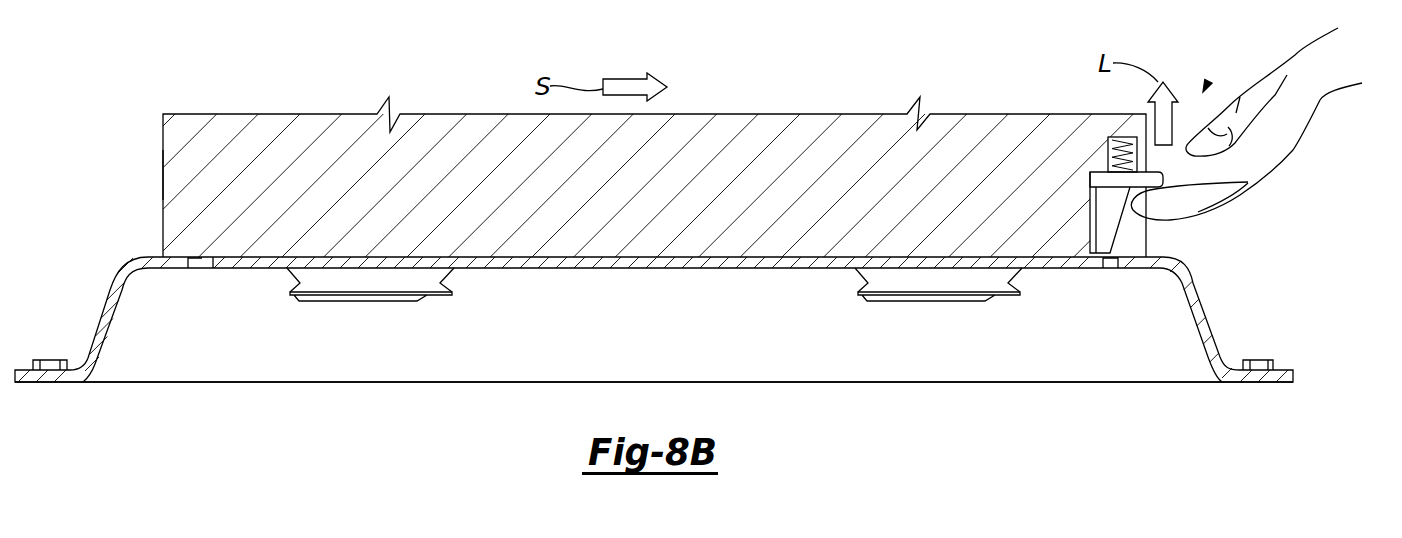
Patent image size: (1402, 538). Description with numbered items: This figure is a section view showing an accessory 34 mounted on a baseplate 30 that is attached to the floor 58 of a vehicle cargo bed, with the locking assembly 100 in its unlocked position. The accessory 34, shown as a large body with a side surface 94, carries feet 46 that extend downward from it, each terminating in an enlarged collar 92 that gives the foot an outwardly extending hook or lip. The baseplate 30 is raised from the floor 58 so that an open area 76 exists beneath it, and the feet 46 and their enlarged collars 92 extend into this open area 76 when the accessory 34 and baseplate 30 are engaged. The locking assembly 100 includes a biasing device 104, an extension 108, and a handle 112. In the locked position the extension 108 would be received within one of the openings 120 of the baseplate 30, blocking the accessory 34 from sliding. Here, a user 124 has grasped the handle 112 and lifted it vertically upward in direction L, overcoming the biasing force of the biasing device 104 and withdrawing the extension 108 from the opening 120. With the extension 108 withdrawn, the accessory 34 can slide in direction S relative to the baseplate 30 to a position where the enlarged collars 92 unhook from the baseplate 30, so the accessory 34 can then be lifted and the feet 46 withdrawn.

The baseplate 30 is at (100, 303).
The accessory 34 is at (172, 132).
The foot 46 is at (358, 302).
The floor 58 is at (295, 382).
The open area 76 is at (1160, 310).
The enlarged collar 92 is at (287, 292).
The side surface 94 is at (163, 172).
The locking assembly 100 is at (1205, 90).
The biasing device 104 is at (1110, 157).
The extension 108 is at (1092, 228).
The handle 112 is at (1165, 180).
The opening 120 is at (203, 268).
The user 124 is at (1293, 150).